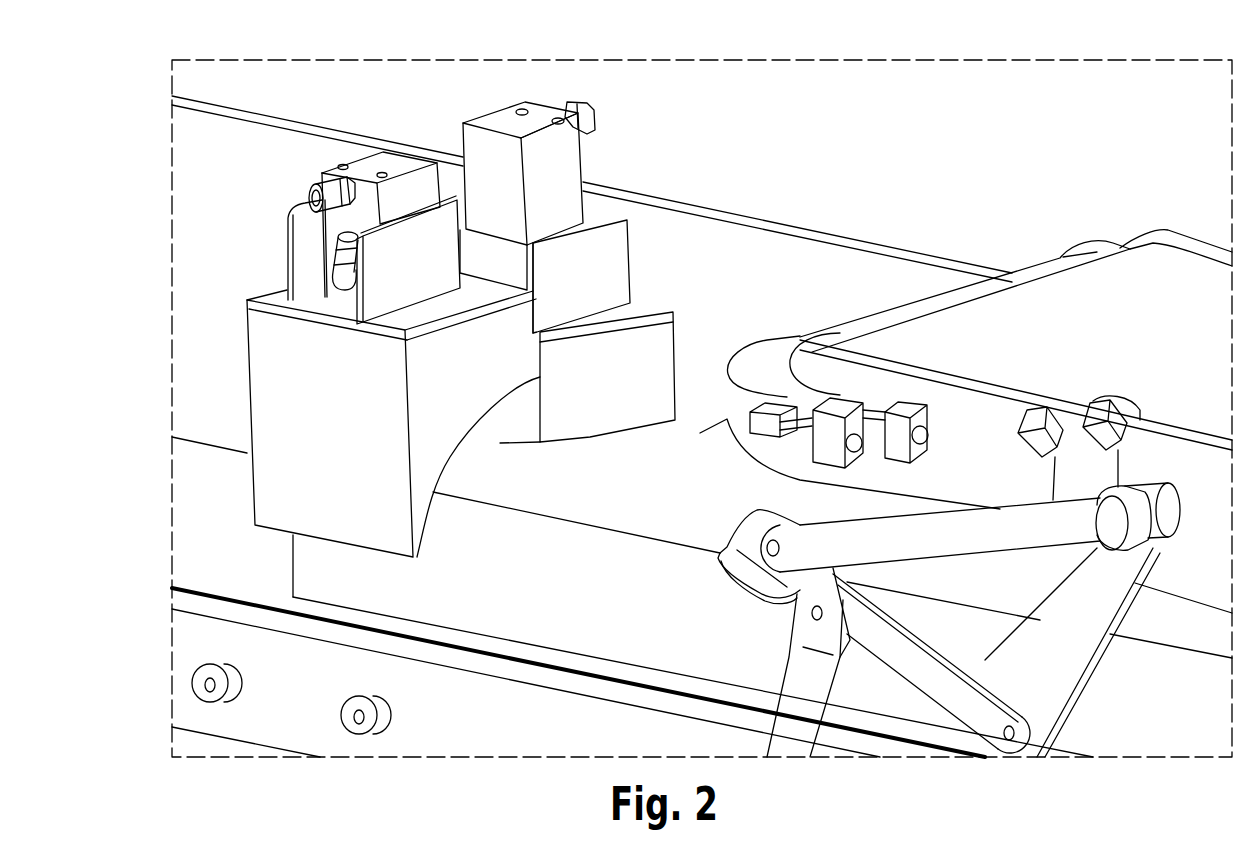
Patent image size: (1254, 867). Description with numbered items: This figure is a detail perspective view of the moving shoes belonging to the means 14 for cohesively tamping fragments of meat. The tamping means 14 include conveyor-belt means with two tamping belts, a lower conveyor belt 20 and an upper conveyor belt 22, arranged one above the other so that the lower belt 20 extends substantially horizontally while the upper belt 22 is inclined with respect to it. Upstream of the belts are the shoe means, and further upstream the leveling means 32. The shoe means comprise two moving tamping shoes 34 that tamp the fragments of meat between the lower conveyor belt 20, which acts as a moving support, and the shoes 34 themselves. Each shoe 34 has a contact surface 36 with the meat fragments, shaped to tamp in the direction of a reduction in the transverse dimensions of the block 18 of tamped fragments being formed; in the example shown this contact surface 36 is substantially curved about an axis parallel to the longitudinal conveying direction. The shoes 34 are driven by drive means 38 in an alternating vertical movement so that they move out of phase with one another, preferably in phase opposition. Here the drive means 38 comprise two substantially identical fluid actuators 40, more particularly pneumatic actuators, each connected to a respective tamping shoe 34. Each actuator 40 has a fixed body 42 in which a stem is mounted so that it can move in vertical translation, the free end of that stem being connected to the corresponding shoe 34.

The means for cohesively tamping the fragments of meat 14 is at (903, 211).
The block of tamped fragments of meat 18 is at (697, 467).
The lower conveyor belt 20 is at (228, 564).
The upper conveyor belt 22 is at (1059, 298).
The leveling means 32 is at (617, 207).
The moving tamping shoe 34 is at (287, 368).
The contact surface 36 is at (455, 440).
The drive means 38 is at (461, 141).
The fluid actuator 40 is at (360, 152).
The fixed body 42 is at (332, 161).